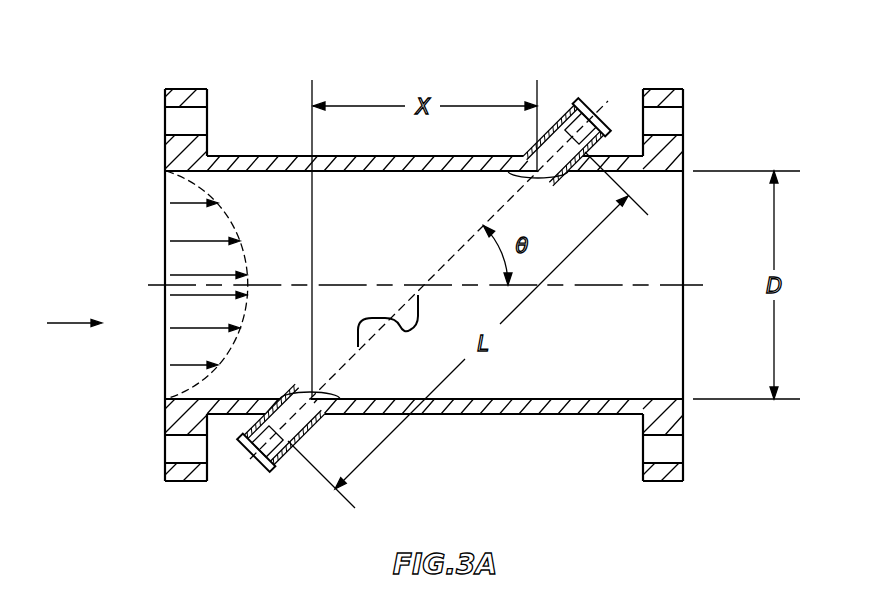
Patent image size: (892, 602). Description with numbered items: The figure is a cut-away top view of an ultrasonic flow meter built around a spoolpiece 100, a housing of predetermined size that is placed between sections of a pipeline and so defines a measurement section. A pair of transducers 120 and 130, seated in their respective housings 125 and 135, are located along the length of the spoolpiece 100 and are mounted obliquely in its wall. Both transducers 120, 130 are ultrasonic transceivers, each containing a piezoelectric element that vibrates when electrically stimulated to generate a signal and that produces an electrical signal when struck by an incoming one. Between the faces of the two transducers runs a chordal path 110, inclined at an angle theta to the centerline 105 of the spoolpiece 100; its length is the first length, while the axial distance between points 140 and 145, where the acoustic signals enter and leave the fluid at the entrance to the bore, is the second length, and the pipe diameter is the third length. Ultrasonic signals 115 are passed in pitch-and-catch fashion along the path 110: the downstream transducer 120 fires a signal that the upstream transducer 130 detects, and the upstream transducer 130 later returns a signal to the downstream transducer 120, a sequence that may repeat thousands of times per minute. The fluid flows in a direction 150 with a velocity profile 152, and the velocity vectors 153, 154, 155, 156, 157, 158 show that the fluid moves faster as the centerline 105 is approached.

The spoolpiece 100 is at (182, 88).
The centerline 105 is at (690, 285).
The path (chord) 110 is at (460, 249).
The ultrasonic signals 115 is at (395, 327).
The downstream transducer 120 is at (591, 103).
The transducer housing 125 is at (563, 118).
The upstream transducer 130 is at (266, 462).
The transducer housing 135 is at (302, 434).
The point 140 is at (537, 175).
The point 145 is at (312, 394).
The flow direction 150 is at (76, 325).
The velocity profile 152 is at (227, 217).
The velocity vector 153 is at (172, 185).
The velocity vector 154 is at (180, 240).
The velocity vector 155 is at (178, 273).
The velocity vector 156 is at (180, 296).
The velocity vector 157 is at (183, 331).
The velocity vector 158 is at (182, 368).